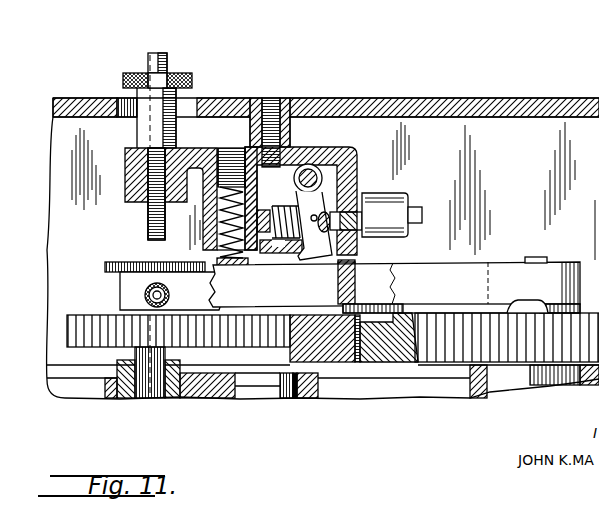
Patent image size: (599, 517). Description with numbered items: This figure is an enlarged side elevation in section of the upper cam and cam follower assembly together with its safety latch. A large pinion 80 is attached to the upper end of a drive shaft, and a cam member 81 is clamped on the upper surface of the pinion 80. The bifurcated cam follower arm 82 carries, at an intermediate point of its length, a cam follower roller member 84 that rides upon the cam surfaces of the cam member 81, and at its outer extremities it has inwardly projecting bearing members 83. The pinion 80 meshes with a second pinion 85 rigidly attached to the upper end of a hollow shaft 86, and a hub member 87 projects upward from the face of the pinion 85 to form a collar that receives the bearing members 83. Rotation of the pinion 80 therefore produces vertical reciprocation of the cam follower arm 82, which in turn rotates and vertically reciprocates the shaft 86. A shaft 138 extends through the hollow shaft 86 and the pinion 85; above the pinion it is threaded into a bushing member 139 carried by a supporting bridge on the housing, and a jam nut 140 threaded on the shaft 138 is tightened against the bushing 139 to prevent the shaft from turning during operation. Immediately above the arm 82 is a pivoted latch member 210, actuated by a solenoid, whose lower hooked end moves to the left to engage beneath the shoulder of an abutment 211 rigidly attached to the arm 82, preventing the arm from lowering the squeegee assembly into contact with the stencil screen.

The large pinion 80 is at (497, 352).
The cam member 81 is at (337, 323).
The cam follower arm 82 is at (425, 268).
The inwardly projecting bearing members 83 is at (142, 295).
The cam follower roller member 84 is at (346, 278).
The second pinion 85 is at (68, 328).
The shaft 86 is at (152, 388).
The hub member 87 is at (110, 270).
The shaft 138 is at (165, 65).
The bushing member 139 is at (138, 160).
The jam nut 140 is at (192, 80).
The pivoted latch member 210 is at (333, 170).
The abutment 211 is at (342, 262).